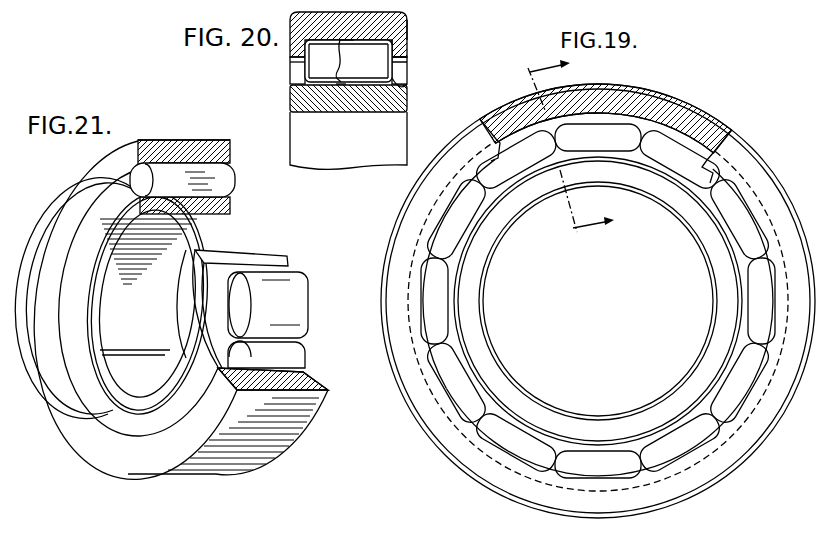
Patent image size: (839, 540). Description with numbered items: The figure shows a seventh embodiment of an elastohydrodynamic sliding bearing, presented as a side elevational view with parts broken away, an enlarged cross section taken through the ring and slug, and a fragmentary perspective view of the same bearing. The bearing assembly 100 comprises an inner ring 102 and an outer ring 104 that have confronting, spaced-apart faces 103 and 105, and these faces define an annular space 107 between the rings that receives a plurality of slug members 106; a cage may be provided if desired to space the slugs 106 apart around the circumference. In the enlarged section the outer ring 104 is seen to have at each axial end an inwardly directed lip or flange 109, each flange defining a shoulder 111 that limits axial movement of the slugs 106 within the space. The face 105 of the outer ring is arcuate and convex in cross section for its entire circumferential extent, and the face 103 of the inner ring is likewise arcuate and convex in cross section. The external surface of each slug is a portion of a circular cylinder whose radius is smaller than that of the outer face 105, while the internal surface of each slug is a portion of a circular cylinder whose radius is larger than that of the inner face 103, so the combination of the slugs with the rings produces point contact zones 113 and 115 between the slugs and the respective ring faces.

In FIG. 19, the bearing assembly 100 is at (750, 131).
In FIG. 21, the bearing assembly 100 is at (89, 164).
In FIG. 19, the inner ring 102 is at (653, 410).
In FIG. 20, the inner ring 102 is at (378, 140).
In FIG. 21, the inner ring 102 is at (223, 220).
In FIG. 19, the face of inner ring 103 is at (708, 187).
In FIG. 20, the face of inner ring 103 is at (407, 90).
In FIG. 21, the face of inner ring 103 is at (263, 252).
In FIG. 19, the outer ring 104 is at (648, 100).
In FIG. 20, the outer ring 104 is at (298, 15).
In FIG. 21, the outer ring 104 is at (143, 140).
In FIG. 19, the face of outer ring 105 is at (672, 94).
In FIG. 20, the face of outer ring 105 is at (407, 22).
In FIG. 21, the face of outer ring 105 is at (197, 140).
In FIG. 19, the slug members 106 is at (657, 148).
In FIG. 20, the slug members 106 is at (383, 67).
In FIG. 21, the slug members 106 is at (233, 168).
In FIG. 20, the annular space 107 is at (325, 61).
In FIG. 19, the lip or flange 109 is at (440, 240).
In FIG. 20, the lip or flange 109 is at (293, 56).
In FIG. 20, the shoulder 111 is at (407, 43).
In FIG. 20, the point contact zone 113 is at (350, 32).
In FIG. 20, the point contact zone 115 is at (341, 85).